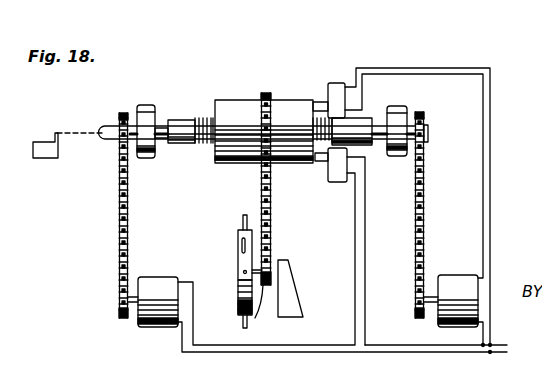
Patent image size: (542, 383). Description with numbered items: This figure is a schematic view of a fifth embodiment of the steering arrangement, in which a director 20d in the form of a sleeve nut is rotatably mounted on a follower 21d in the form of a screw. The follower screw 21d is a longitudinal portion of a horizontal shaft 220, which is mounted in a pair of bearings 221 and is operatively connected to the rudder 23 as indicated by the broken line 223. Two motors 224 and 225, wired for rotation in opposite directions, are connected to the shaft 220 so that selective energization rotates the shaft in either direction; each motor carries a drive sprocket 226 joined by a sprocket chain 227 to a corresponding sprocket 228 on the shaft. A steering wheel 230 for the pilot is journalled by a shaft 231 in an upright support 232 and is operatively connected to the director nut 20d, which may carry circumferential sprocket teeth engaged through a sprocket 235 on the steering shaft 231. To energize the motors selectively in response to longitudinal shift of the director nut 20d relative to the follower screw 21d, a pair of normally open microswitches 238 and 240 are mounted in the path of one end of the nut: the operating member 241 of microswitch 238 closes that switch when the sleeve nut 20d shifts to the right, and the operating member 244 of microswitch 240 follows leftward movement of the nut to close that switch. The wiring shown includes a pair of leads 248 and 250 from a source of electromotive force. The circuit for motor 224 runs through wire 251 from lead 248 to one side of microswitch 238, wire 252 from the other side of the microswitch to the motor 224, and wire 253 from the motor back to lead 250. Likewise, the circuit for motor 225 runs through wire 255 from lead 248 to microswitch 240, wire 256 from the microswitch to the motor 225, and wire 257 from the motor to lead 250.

The director 20d is at (230, 103).
The follower 21d is at (178, 120).
The rudder 23 is at (47, 158).
The shaft 220 is at (163, 138).
The sprocket wheel 221 is at (143, 107).
The broken line 223 is at (72, 128).
The motor 224 is at (453, 280).
The motor 225 is at (160, 282).
The drive sprocket 226 is at (119, 315).
The sprocket chain 227 is at (120, 225).
The sprocket 228 is at (118, 141).
The steering wheel 230 is at (238, 234).
The shaft 231 is at (248, 322).
The upright support 232 is at (293, 293).
The sprocket 235 is at (270, 263).
The microswitch 238 is at (335, 86).
The microswitch 240 is at (338, 183).
The operating member 241 is at (326, 106).
The operating member 244 is at (320, 162).
The lead 248 is at (503, 343).
The lead 250 is at (503, 350).
The wire 251 is at (491, 190).
The wire 252 is at (484, 220).
The wire 253 is at (478, 328).
The wire 255 is at (365, 290).
The wire 256 is at (355, 310).
The wire 257 is at (182, 349).